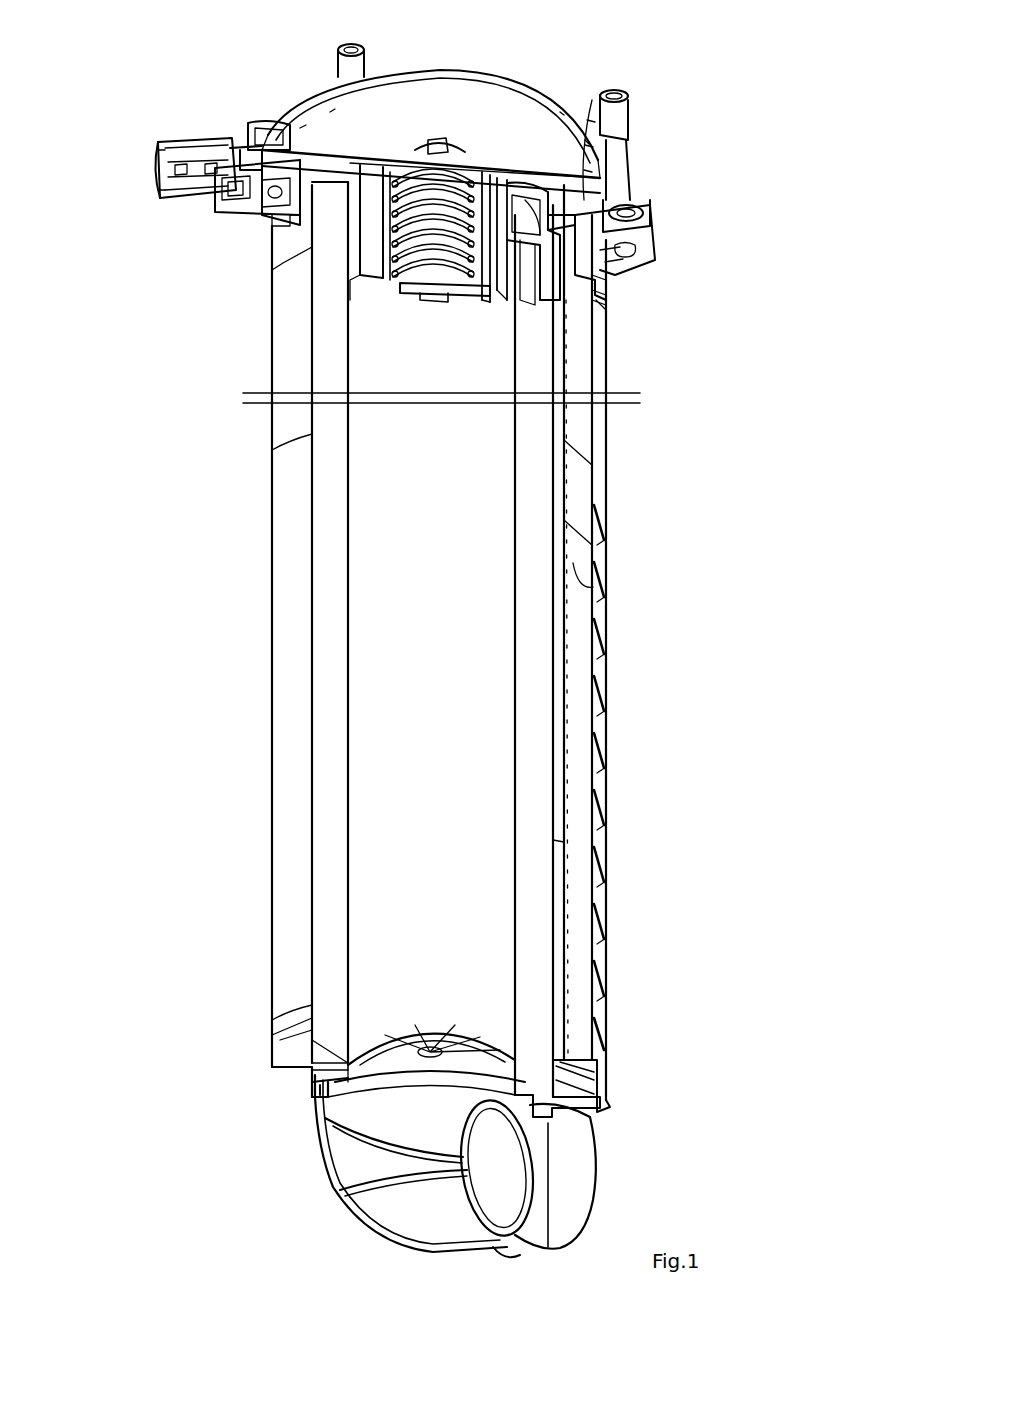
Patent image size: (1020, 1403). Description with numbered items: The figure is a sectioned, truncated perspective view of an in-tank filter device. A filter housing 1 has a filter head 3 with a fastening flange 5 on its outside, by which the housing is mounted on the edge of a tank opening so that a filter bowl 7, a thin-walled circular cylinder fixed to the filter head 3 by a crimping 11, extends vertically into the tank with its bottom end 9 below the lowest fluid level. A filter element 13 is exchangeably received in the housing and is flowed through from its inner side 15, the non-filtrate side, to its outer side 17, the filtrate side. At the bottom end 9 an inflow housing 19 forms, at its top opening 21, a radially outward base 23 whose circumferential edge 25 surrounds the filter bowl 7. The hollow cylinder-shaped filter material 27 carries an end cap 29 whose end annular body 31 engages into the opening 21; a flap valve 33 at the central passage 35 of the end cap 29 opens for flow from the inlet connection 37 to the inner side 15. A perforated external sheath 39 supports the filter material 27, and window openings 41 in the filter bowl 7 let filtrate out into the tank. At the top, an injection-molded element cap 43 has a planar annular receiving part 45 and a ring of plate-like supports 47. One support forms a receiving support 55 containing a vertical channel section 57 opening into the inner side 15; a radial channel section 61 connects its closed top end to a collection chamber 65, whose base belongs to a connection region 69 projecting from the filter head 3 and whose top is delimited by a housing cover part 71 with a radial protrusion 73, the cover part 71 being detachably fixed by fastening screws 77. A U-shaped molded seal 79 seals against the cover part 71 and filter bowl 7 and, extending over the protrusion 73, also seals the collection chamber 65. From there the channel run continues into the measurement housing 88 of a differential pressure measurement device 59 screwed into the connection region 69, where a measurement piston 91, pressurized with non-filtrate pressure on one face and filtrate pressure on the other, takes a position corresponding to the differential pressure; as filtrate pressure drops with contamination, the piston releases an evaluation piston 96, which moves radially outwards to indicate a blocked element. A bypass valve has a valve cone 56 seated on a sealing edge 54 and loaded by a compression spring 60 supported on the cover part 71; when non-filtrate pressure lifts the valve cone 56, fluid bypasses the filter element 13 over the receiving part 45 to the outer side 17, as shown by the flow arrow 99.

The filter housing 1 is at (215, 482).
The filter head 3 is at (592, 250).
The fastening flange 5 is at (645, 230).
The filter bowl 7 is at (620, 385).
The bottom end 9 is at (273, 1033).
The crimping 11 is at (625, 300).
The filter element 13 is at (312, 558).
The inner side 15 is at (475, 538).
The outer side 17 is at (605, 597).
The inflow housing 19 is at (353, 1207).
The top opening 21 is at (323, 1087).
The base 23 is at (597, 1113).
The circumferential edge 25 is at (600, 1102).
The filter material 27 is at (530, 842).
The end cap 29 is at (300, 1033).
The end annular body 31 is at (337, 1090).
The flap valve 33 is at (423, 1033).
The central passage 35 is at (350, 1045).
The inlet connection 37 is at (600, 1203).
The external sheath 39 is at (563, 543).
The window openings 41 is at (607, 552).
The element cap 43 is at (553, 212).
The receiving part 45 is at (528, 245).
The supports 47 is at (497, 305).
The sealing edge 54 is at (372, 285).
The receiving support 55 is at (367, 250).
The valve cone 56 is at (470, 294).
The channel section 57 is at (393, 160).
The differential pressure measurement device 59 is at (205, 150).
The compression spring 60 is at (410, 296).
The channel section 61 is at (350, 162).
The collection chamber 65 is at (250, 150).
The connection region 69 is at (283, 217).
The housing cover part 71 is at (347, 110).
The radial protrusion 73 is at (273, 122).
The fastening screws 77 is at (373, 73).
The molded seal 79 is at (653, 213).
The measurement housing 88 is at (228, 200).
The measurement piston 91 is at (258, 187).
The evaluation piston 96 is at (173, 205).
The flow arrow 99 is at (530, 187).